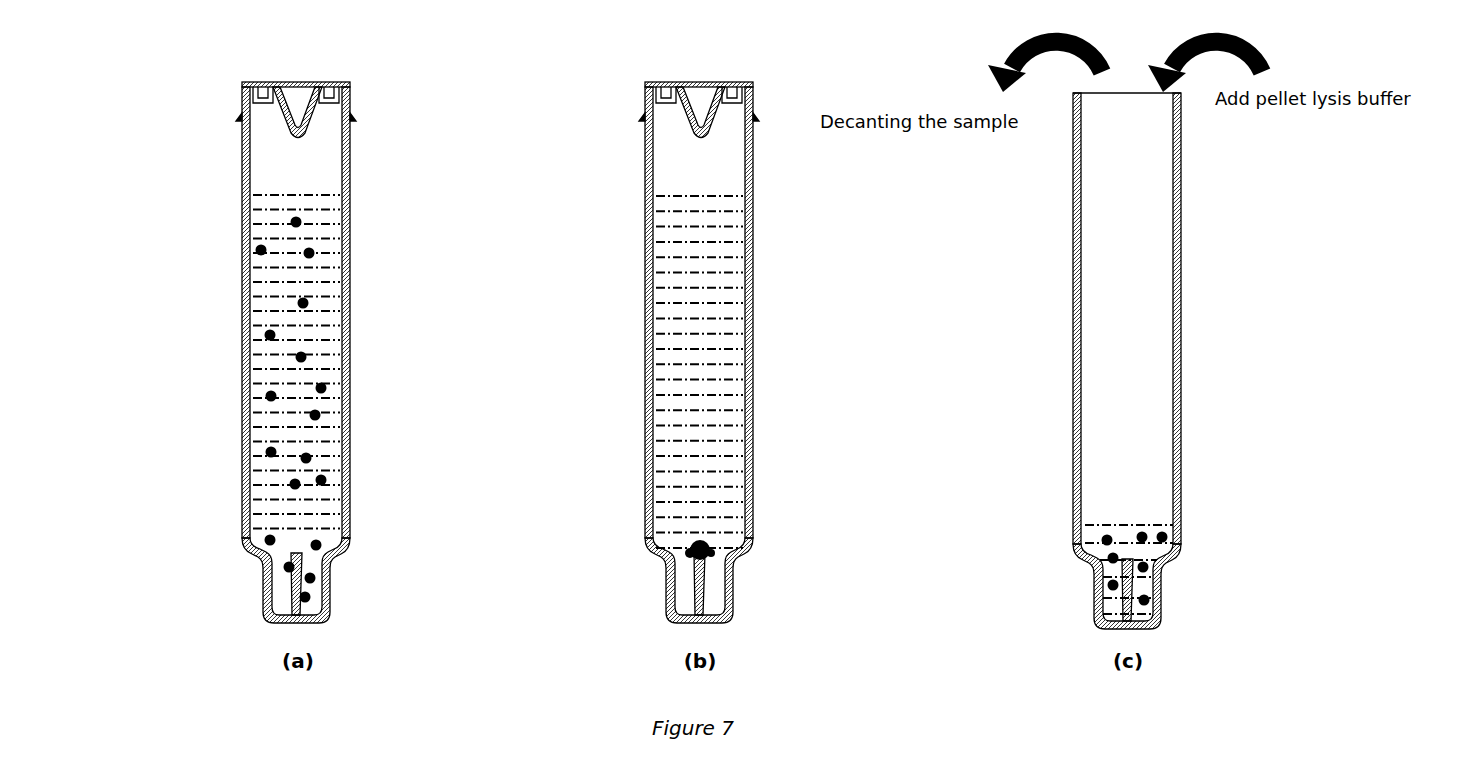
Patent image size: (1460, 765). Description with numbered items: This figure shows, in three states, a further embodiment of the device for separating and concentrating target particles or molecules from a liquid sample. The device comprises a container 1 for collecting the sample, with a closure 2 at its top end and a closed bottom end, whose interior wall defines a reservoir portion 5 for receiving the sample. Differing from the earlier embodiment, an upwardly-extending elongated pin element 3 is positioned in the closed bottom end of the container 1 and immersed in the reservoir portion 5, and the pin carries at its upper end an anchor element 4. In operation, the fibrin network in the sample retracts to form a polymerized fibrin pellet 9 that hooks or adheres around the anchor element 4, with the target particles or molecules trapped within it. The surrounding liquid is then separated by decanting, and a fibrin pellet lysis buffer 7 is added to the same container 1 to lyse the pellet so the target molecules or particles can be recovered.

The container 1 is at (348, 224).
The closure 2 is at (243, 99).
The elongated pin element 3 is at (308, 592).
The anchor element 4 is at (290, 549).
The reservoir portion 5 is at (260, 305).
The fibrin pellet lysis buffer 7 is at (1160, 530).
The polymerized fibrin pellet 9 is at (708, 548).